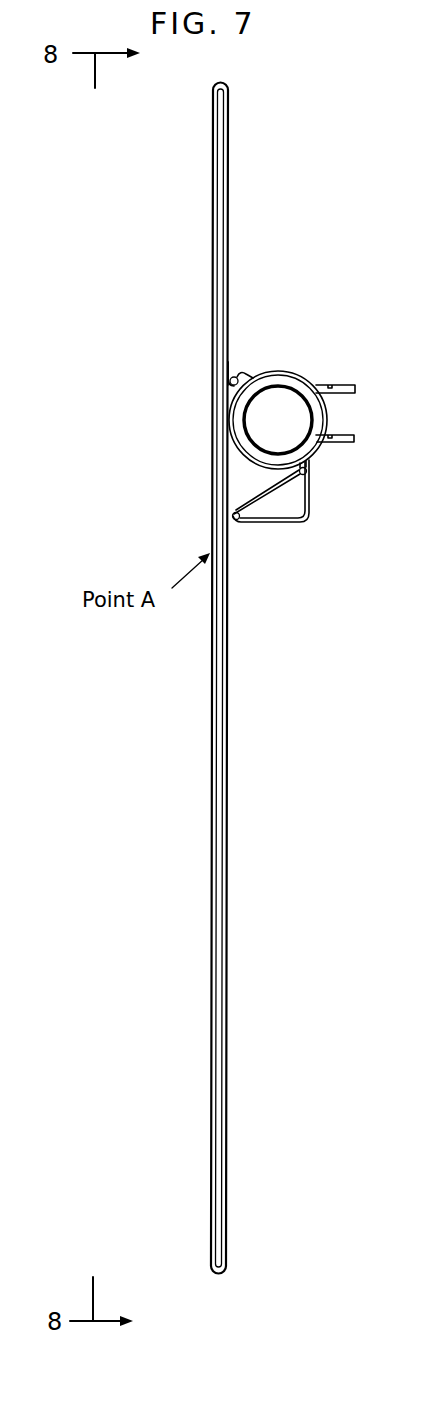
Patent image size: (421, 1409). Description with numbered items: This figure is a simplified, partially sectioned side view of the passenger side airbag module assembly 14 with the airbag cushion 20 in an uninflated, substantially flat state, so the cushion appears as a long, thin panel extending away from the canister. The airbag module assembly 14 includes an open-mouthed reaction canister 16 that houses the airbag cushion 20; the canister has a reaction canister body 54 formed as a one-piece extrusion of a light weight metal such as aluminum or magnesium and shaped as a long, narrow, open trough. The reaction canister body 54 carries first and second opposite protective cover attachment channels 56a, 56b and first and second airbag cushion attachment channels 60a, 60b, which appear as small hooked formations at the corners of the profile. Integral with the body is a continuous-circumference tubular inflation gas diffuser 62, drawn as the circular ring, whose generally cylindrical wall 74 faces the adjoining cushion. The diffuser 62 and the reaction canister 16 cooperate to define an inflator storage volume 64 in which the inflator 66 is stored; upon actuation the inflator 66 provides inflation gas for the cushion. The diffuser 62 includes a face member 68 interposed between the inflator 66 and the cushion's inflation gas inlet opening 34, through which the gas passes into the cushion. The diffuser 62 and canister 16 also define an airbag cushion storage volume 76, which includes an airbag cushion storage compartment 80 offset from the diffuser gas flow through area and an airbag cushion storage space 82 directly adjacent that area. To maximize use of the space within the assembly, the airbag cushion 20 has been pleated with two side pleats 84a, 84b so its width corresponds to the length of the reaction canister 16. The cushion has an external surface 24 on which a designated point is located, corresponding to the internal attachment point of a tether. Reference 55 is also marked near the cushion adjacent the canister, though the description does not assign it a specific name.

The airbag module assembly 14 is at (272, 253).
The reaction canister 16 is at (324, 533).
The airbag cushion 20 is at (205, 842).
The external surface 24 is at (213, 740).
The inflation gas inlet opening 34 is at (225, 492).
The reaction canister body 54 is at (290, 521).
The channel 55 is at (219, 470).
The first protective cover attachment channel 56a is at (250, 374).
The second protective cover attachment channel 56b is at (239, 522).
The first airbag cushion attachment channel 60a is at (236, 372).
The second airbag cushion attachment channel 60b is at (307, 469).
The inflation gas diffuser 62 is at (230, 433).
The inflator storage volume 64 is at (313, 388).
The inflator 66 is at (278, 420).
The face member 68 is at (230, 398).
The cylindrical wall 74 is at (229, 384).
The airbag cushion storage volume 76 is at (292, 505).
The airbag cushion storage compartment 80 is at (272, 500).
The airbag cushion storage space 82 is at (230, 418).
The first side pleat 84a is at (222, 151).
The second side pleat 84b is at (228, 205).